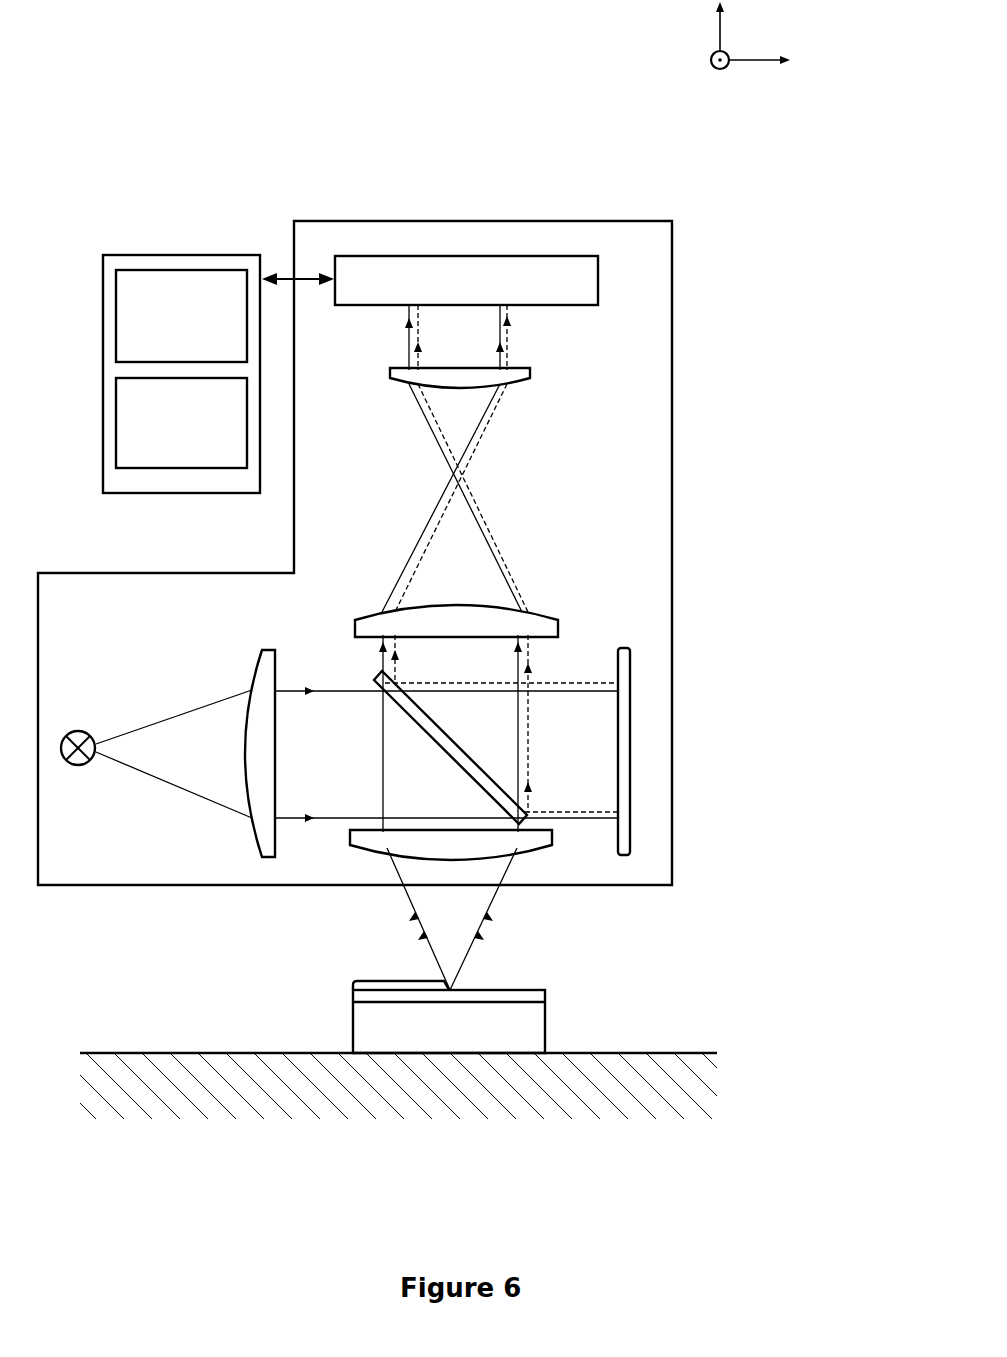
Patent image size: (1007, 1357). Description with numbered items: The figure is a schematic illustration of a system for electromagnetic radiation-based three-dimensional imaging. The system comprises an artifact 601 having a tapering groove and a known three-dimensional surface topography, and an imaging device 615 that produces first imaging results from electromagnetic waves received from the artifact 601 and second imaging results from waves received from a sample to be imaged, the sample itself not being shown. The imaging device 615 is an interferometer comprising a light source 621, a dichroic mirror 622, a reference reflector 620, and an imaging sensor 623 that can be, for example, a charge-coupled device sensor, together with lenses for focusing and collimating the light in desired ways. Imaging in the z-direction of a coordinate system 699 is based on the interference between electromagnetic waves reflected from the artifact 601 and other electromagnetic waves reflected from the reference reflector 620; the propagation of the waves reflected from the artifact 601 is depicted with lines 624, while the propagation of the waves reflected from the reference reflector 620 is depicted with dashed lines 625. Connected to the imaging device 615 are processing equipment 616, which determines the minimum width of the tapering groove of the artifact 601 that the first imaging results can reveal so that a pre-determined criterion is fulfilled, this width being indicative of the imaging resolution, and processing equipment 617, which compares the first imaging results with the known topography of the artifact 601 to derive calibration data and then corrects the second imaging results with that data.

The coordinate system 699 is at (781, 37).
The processing equipment 616 is at (202, 329).
The processing equipment 617 is at (202, 435).
The imaging device 615 is at (672, 456).
The imaging sensor 623 is at (487, 295).
The reference reflector 620 is at (624, 647).
The light source 621 is at (78, 766).
The dichroic mirror 622 is at (407, 713).
The lines 624 is at (428, 422).
The dashed lines 625 is at (477, 452).
The artifact 601 is at (547, 1008).